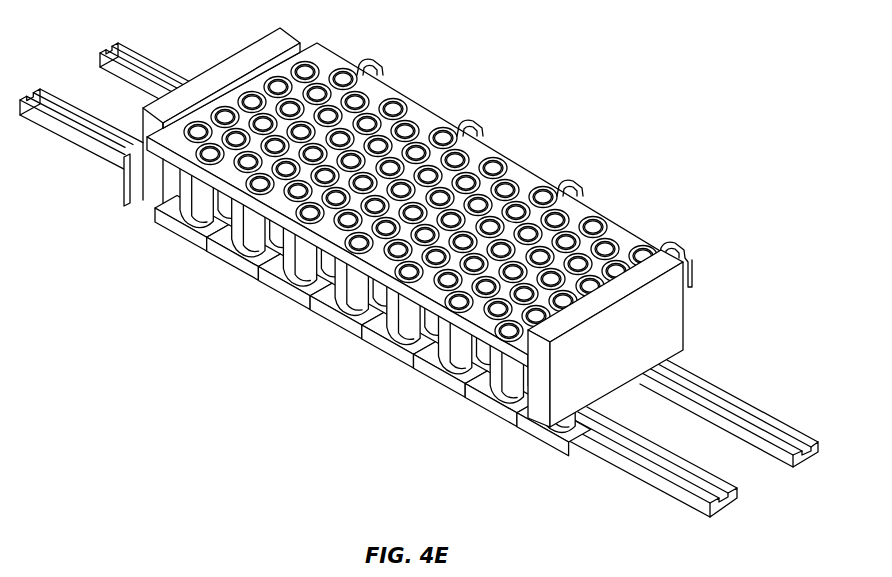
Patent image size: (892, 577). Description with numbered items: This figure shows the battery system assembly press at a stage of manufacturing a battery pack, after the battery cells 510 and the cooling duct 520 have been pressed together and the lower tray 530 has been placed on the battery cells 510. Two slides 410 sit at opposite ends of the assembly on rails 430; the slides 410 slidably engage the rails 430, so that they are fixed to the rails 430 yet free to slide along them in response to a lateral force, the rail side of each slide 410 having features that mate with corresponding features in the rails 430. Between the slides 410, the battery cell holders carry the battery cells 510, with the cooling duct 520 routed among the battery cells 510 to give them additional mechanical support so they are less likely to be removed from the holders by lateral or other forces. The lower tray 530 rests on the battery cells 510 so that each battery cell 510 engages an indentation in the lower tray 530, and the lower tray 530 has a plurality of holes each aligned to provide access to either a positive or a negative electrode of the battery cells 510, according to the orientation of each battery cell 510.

The slide 410 is at (223, 73).
The rail 430 is at (793, 442).
The battery cell 510 is at (200, 210).
The cooling duct 520 is at (573, 182).
The lower tray 530 is at (423, 120).